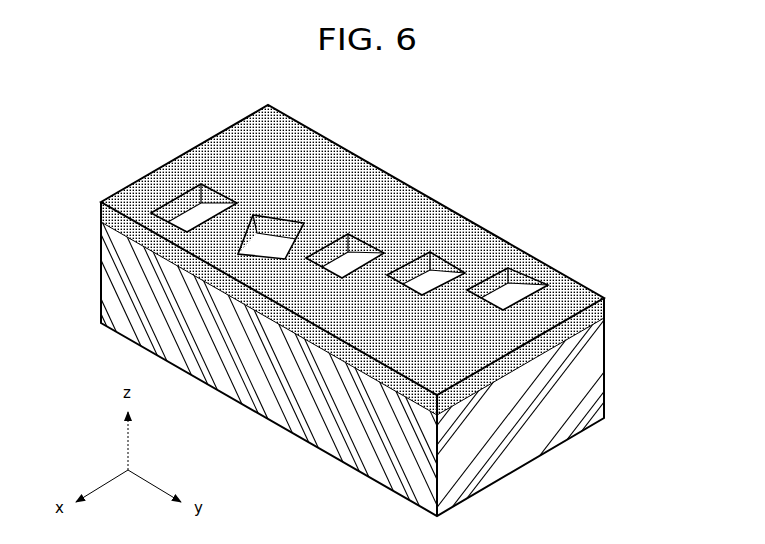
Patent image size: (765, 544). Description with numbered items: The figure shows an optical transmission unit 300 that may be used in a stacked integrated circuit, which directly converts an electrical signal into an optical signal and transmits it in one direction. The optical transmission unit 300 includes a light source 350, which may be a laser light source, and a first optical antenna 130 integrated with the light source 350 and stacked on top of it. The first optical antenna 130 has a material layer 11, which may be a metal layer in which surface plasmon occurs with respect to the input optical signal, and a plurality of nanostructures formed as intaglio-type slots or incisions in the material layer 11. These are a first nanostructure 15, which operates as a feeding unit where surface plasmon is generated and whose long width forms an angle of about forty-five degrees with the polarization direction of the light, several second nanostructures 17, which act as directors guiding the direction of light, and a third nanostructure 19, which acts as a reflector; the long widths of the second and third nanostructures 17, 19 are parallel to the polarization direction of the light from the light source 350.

The optical transmission unit 300 is at (130, 153).
The first optical antenna 130 is at (448, 155).
The third nanostructure 19 is at (213, 200).
The first nanostructure 15 is at (278, 227).
The second nanostructure 17 is at (363, 247).
The material layer 11 is at (605, 318).
The light source 350 is at (588, 383).